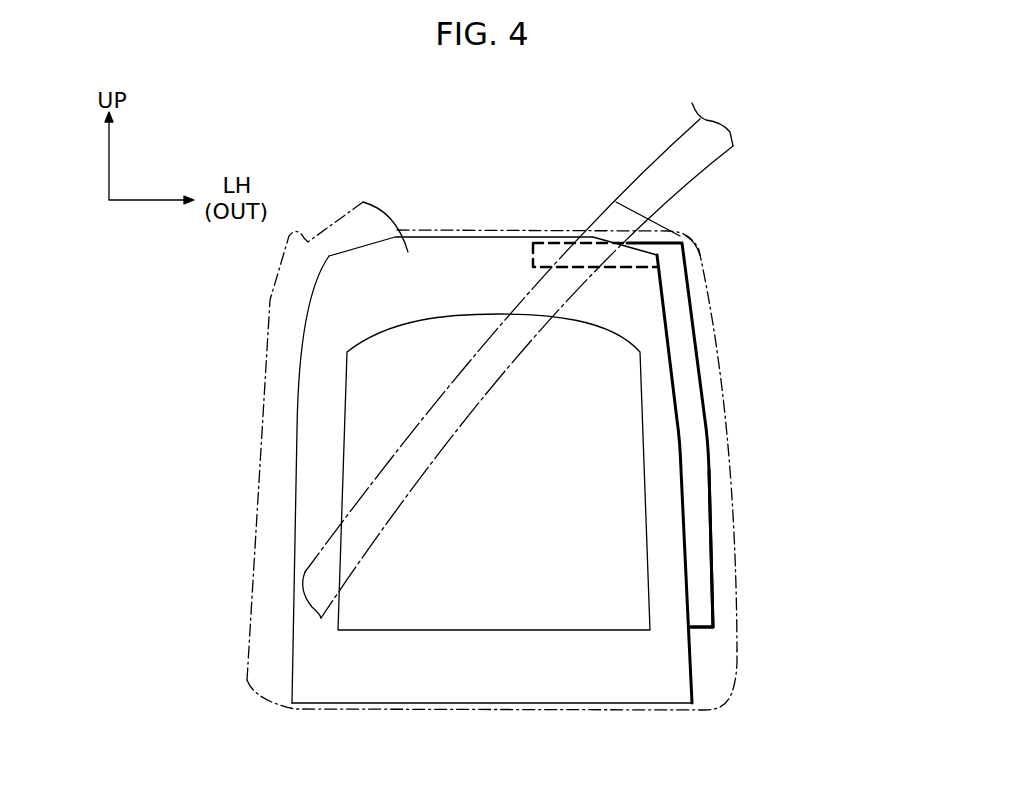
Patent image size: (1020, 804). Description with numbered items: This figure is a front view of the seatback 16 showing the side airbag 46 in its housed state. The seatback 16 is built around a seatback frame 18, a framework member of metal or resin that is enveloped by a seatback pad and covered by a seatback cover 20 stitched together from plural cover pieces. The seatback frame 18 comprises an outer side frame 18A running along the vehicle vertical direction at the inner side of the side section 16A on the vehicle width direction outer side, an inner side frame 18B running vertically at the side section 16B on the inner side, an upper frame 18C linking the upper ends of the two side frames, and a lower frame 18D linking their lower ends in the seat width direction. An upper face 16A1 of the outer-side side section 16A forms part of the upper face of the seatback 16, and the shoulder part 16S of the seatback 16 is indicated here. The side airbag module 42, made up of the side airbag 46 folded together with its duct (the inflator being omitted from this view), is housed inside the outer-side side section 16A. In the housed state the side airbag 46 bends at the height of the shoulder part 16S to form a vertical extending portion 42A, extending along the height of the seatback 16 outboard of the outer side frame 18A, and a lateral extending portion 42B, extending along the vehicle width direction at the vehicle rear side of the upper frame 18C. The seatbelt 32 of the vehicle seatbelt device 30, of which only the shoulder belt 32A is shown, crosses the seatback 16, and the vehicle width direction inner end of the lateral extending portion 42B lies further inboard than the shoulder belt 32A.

The seatback 16 is at (487, 414).
The side section 16A is at (718, 356).
The upper face 16A1 is at (622, 200).
The side section 16B is at (262, 378).
The shoulder part 16S is at (703, 253).
The seatback frame 18 is at (428, 457).
The outer side frame 18A is at (646, 500).
The inner side frame 18B is at (350, 417).
The upper frame 18C is at (468, 247).
The lower frame 18D is at (496, 693).
The seatback cover 20 is at (250, 513).
The vehicle seatbelt device 30 is at (518, 334).
The seatbelt 32 is at (518, 334).
The shoulder belt 32A is at (472, 414).
The side airbag module 42 is at (679, 387).
The vertical extending portion 42A is at (718, 565).
The lateral extending portion 42B is at (560, 242).
The side airbag 46 is at (698, 498).